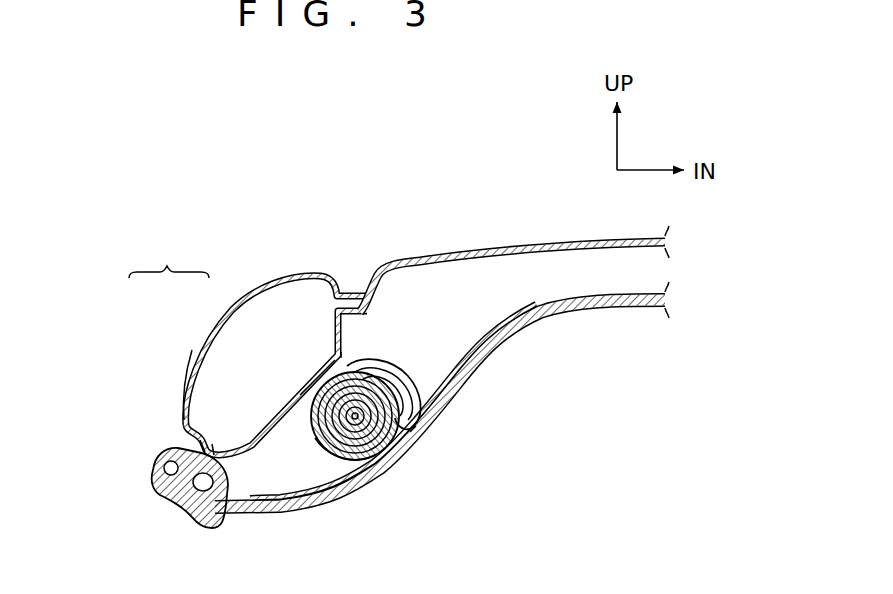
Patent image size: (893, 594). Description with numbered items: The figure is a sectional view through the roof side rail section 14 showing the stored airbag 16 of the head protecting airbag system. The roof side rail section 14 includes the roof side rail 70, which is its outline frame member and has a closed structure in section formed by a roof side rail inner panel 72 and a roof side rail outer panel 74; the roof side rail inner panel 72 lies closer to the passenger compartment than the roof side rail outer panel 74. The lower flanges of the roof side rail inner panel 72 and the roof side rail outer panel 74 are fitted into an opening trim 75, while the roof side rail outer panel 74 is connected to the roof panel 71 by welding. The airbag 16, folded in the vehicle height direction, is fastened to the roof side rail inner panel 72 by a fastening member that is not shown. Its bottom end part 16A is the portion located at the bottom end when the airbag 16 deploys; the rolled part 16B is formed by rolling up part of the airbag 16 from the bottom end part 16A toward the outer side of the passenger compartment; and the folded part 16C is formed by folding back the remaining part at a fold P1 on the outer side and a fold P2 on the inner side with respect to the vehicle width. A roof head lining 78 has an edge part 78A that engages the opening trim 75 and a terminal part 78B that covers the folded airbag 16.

The roof side rail section 14 is at (270, 274).
The airbag 16 is at (398, 355).
The bottom end part 16A is at (351, 462).
The rolled part 16B is at (322, 450).
The folded part 16C is at (409, 376).
The roof side rail 70 is at (232, 331).
The roof panel 71 is at (550, 237).
The roof side rail inner panel 72 is at (295, 388).
The roof side rail outer panel 74 is at (186, 345).
The opening trim 75 is at (158, 465).
The roof head lining 78 is at (594, 325).
The edge part 78A is at (203, 527).
The terminal part 78B is at (390, 473).
The fold P1 is at (336, 355).
The fold P2 is at (413, 434).